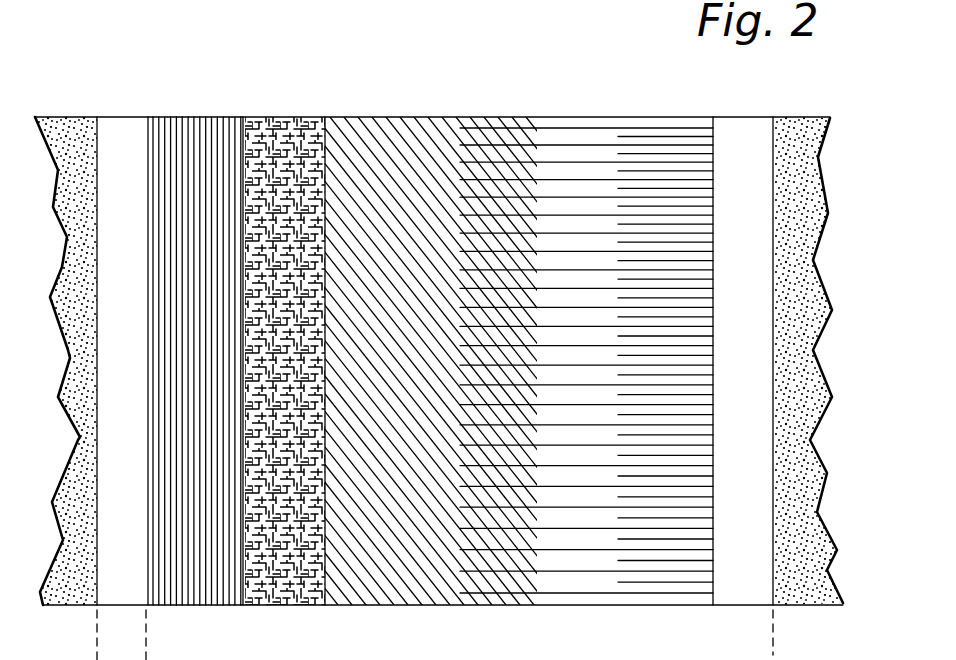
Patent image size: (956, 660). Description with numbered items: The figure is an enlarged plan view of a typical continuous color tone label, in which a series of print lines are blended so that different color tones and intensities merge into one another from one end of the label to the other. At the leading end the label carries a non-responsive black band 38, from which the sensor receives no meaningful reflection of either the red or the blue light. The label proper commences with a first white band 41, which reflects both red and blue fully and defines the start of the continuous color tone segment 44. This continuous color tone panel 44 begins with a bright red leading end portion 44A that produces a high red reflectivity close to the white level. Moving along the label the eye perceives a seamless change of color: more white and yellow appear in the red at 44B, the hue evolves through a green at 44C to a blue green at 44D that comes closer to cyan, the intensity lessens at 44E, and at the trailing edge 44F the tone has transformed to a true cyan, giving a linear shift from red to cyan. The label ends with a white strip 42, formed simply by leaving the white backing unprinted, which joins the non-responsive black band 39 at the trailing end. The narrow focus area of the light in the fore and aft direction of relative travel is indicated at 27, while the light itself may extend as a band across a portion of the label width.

The focus area 27 is at (58, 358).
The black band 38 is at (52, 606).
The black band 39 is at (805, 118).
The first white band 41 is at (132, 583).
The white strip 42 is at (737, 587).
The continuous color tone segment 44 is at (713, 107).
The leading end portion 44A is at (243, 112).
The red with white and yellow portion 44B is at (325, 112).
The green portion 44C is at (460, 112).
The blue green portion 44D is at (542, 112).
The reduced intensity portion 44E is at (680, 112).
The trailing edge 44F is at (713, 135).